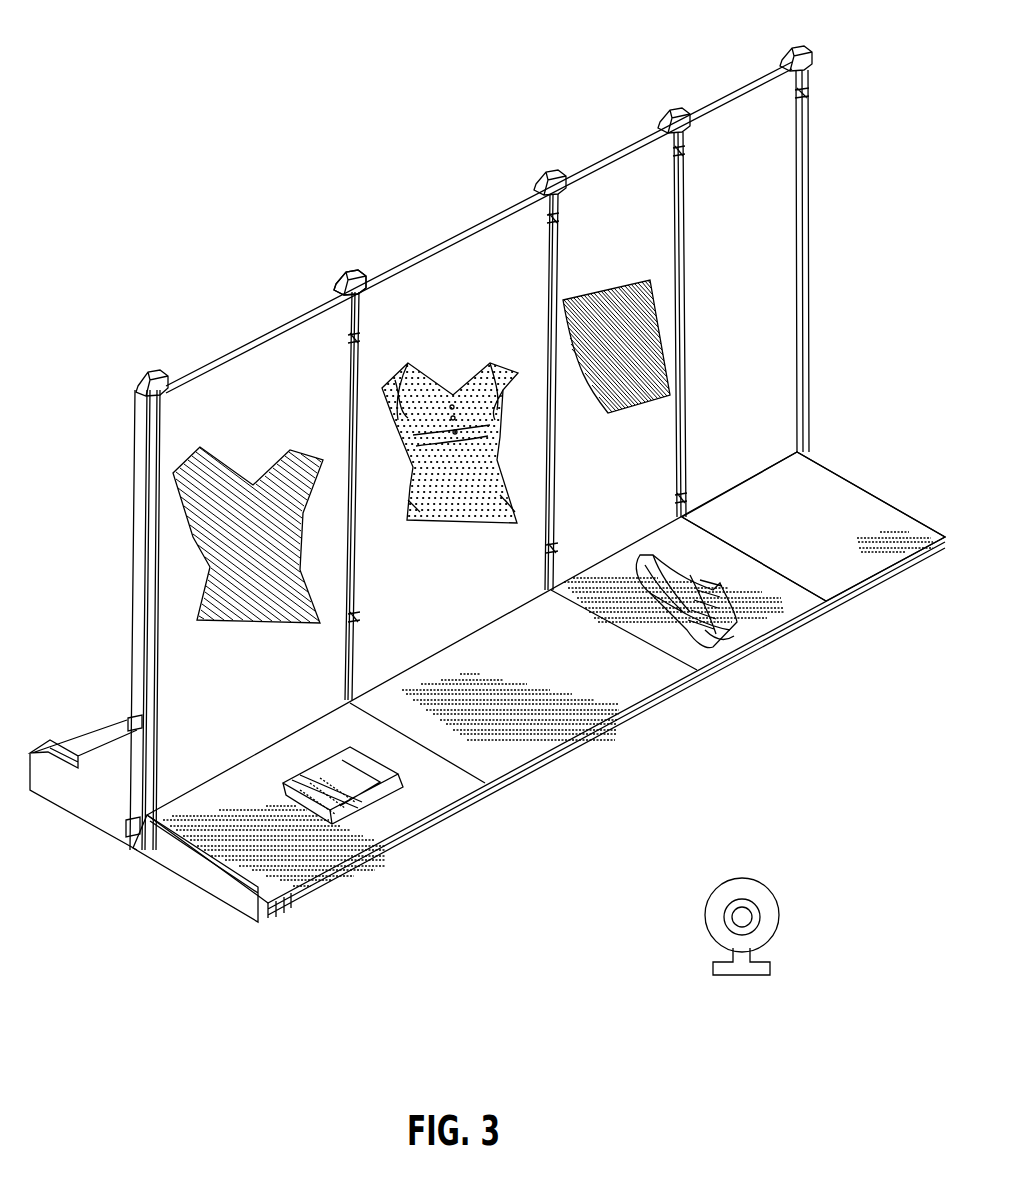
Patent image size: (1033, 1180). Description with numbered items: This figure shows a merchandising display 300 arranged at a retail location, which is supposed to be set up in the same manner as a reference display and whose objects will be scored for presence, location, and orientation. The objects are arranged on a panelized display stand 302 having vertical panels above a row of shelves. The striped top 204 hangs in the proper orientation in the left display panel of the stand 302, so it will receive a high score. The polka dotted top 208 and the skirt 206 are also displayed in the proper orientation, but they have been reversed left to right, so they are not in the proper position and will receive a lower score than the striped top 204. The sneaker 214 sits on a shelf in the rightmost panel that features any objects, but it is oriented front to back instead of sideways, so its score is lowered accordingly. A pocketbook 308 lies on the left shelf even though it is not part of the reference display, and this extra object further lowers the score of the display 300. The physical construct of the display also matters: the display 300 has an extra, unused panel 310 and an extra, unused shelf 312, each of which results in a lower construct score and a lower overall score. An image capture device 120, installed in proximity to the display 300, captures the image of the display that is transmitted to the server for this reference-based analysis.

The merchandising display 300 is at (103, 63).
The panelized display stand 302 is at (340, 278).
The unused panel 310 is at (756, 270).
The unused shelf 312 is at (816, 521).
The striped top 204 is at (242, 623).
The polka dotted top 208 is at (433, 523).
The skirt 206 is at (608, 413).
The sneaker 214 is at (707, 580).
The pocketbook 308 is at (313, 810).
The image capture device 120 is at (778, 905).